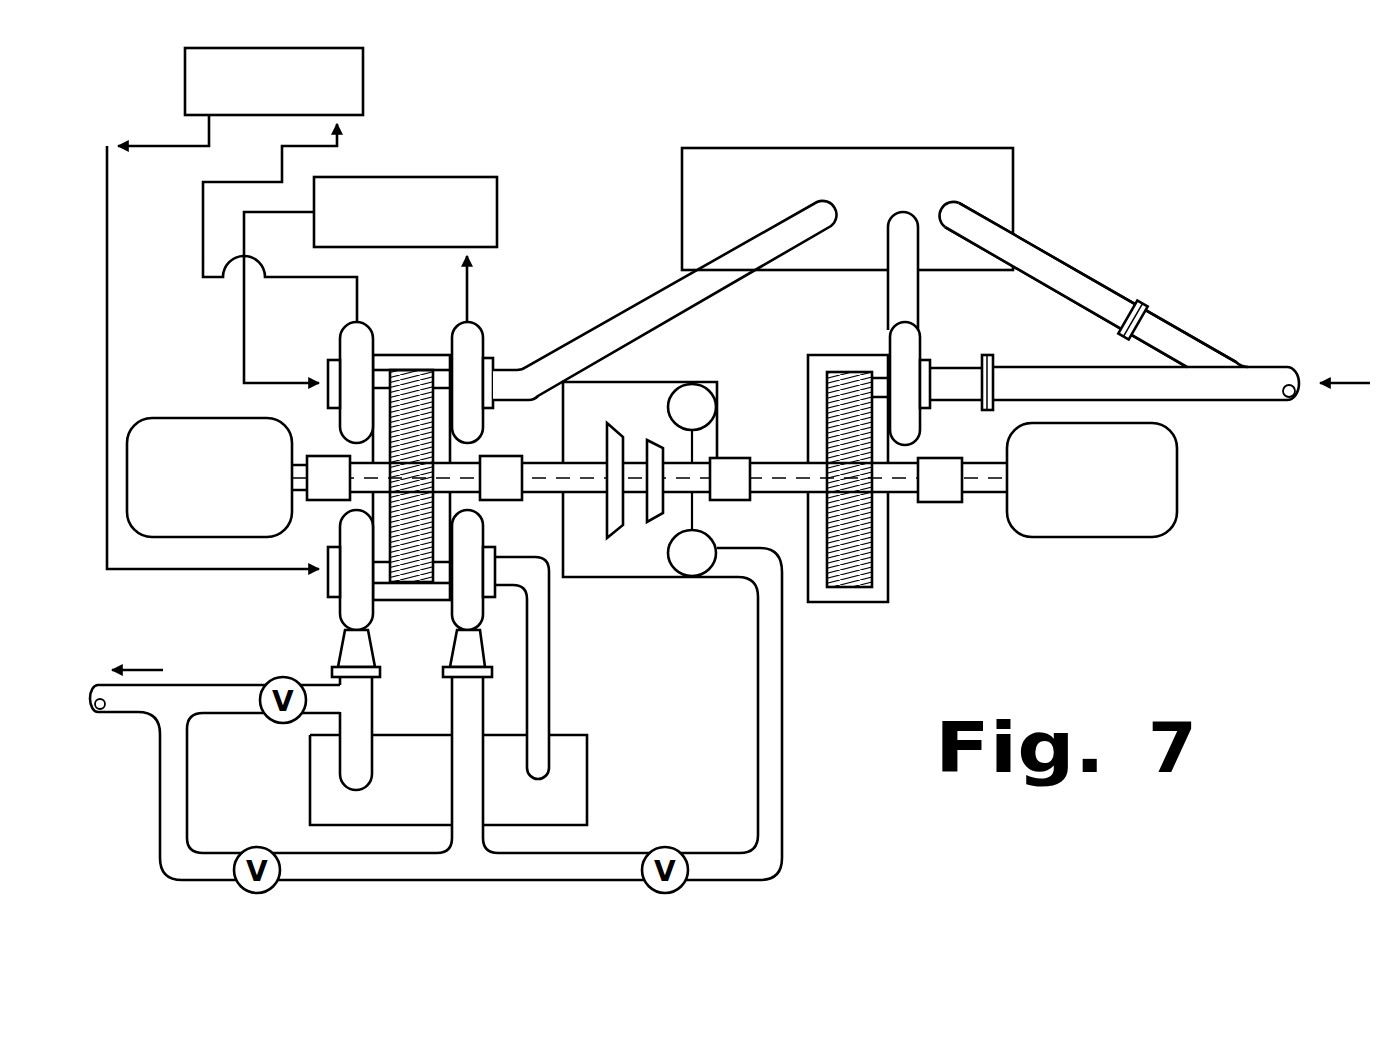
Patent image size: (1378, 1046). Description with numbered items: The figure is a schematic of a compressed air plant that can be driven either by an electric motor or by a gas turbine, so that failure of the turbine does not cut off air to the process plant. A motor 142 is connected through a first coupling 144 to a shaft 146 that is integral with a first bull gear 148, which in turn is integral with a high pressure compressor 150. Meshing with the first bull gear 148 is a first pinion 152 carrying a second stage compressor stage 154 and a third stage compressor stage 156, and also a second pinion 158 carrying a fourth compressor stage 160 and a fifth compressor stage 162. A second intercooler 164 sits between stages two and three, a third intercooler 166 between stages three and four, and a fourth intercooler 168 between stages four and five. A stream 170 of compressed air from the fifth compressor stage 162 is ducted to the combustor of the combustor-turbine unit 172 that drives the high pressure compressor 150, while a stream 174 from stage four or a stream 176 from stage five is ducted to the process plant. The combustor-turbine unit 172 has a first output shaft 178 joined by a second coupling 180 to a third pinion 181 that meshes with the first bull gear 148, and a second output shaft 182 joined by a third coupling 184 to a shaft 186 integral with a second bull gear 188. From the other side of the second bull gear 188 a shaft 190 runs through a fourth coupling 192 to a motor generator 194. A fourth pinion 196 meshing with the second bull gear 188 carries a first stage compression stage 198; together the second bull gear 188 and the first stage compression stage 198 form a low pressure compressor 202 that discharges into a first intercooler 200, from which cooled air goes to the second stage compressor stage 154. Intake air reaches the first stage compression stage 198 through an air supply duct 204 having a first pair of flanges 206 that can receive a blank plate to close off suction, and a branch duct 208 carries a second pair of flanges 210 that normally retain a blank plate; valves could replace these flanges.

The motor 142 is at (170, 418).
The first coupling 144 is at (325, 480).
The shaft 146 is at (357, 463).
The first bull gear 148 is at (437, 432).
The high pressure compressor 150 is at (512, 345).
The first pinion 152 is at (392, 370).
The second stage compressor stage 154 is at (486, 345).
The third stage compressor stage 156 is at (332, 360).
The second pinion 158 is at (412, 586).
The fourth compressor stage 160 is at (352, 605).
The fifth compressor stage 162 is at (485, 603).
The second intercooler 164 is at (418, 229).
The third intercooler 166 is at (290, 97).
The fourth intercooler 168 is at (428, 790).
The stream of compressed air 170 is at (717, 865).
The combustor-turbine unit 172 is at (593, 578).
The stream of compressed air 174 is at (320, 683).
The stream of compressed air 176 is at (168, 770).
The first output shaft 178 is at (568, 462).
The second coupling 180 is at (498, 480).
The third pinion 181 is at (357, 494).
The second output shaft 182 is at (700, 446).
The third coupling 184 is at (730, 493).
The shaft 186 is at (783, 477).
The second bull gear 188 is at (857, 586).
The shaft 190 is at (902, 492).
The fourth coupling 192 is at (947, 502).
The motor generator 194 is at (1108, 497).
The fourth pinion 196 is at (857, 372).
The first stage compression stage 198 is at (920, 344).
The first intercooler 200 is at (882, 200).
The low pressure compressor 202 is at (900, 590).
The air supply duct 204 is at (1212, 400).
The first pair of flanges 206 is at (976, 388).
The duct 208 is at (1187, 350).
The second pair of flanges 210 is at (1123, 303).